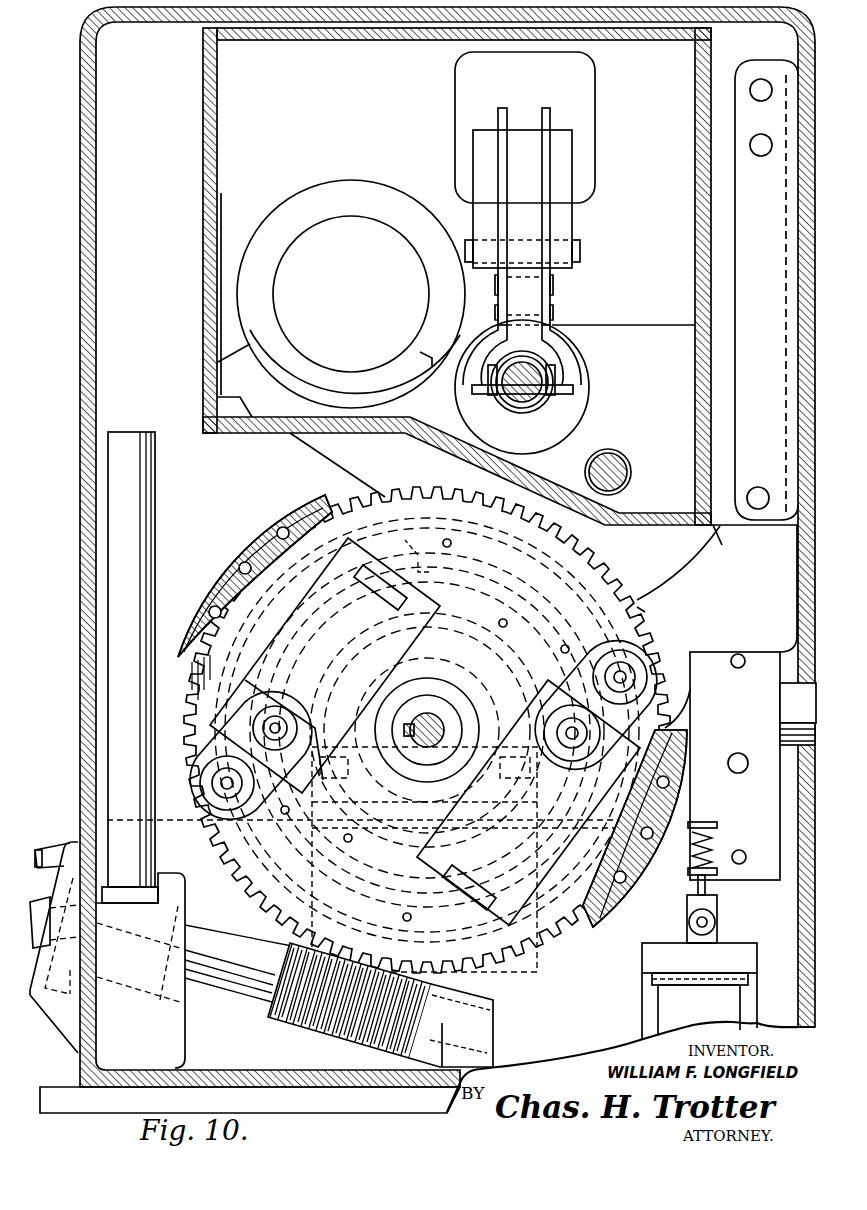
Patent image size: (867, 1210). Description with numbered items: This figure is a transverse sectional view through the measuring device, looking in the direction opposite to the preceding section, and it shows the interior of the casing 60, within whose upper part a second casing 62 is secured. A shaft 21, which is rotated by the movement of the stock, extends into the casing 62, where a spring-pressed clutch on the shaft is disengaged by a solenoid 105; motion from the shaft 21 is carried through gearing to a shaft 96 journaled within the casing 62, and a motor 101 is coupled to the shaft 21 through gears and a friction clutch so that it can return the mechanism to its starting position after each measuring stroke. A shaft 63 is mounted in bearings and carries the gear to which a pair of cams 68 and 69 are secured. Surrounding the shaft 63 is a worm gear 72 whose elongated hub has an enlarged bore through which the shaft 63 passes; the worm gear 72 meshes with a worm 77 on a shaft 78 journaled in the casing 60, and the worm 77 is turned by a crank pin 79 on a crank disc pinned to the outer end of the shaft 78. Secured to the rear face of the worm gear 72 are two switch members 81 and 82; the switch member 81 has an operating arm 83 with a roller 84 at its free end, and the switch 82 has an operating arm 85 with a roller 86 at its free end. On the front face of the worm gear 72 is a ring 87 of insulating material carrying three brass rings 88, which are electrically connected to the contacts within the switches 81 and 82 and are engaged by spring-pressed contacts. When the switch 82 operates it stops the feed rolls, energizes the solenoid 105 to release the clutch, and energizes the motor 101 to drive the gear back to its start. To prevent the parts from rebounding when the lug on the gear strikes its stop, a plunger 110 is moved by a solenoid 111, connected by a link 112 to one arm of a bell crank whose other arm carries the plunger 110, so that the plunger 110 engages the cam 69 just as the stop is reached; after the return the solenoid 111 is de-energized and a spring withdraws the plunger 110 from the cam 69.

The casing 60 is at (80, 680).
The second casing 62 is at (219, 165).
The motor 101 is at (360, 180).
The solenoid 105 is at (585, 124).
The shaft 21 is at (525, 397).
The shaft 96 is at (612, 460).
The worm gear 72 is at (605, 576).
The ring of insulating material 87 is at (640, 607).
The shaft 63 is at (417, 740).
The cam 68 is at (230, 563).
The brass rings 88 is at (428, 530).
The switch member 82 is at (408, 630).
The operating arm 85 is at (212, 750).
The roller 86 is at (220, 807).
The switch member 81 is at (520, 888).
The roller 84 is at (632, 658).
The operating arm 83 is at (627, 718).
The cam 69 is at (630, 880).
The plunger 110 is at (683, 718).
The link 112 is at (707, 887).
The solenoid 111 is at (648, 1010).
The shaft 78 is at (158, 994).
The crank pin 79 is at (50, 850).
The worm 77 is at (300, 1028).